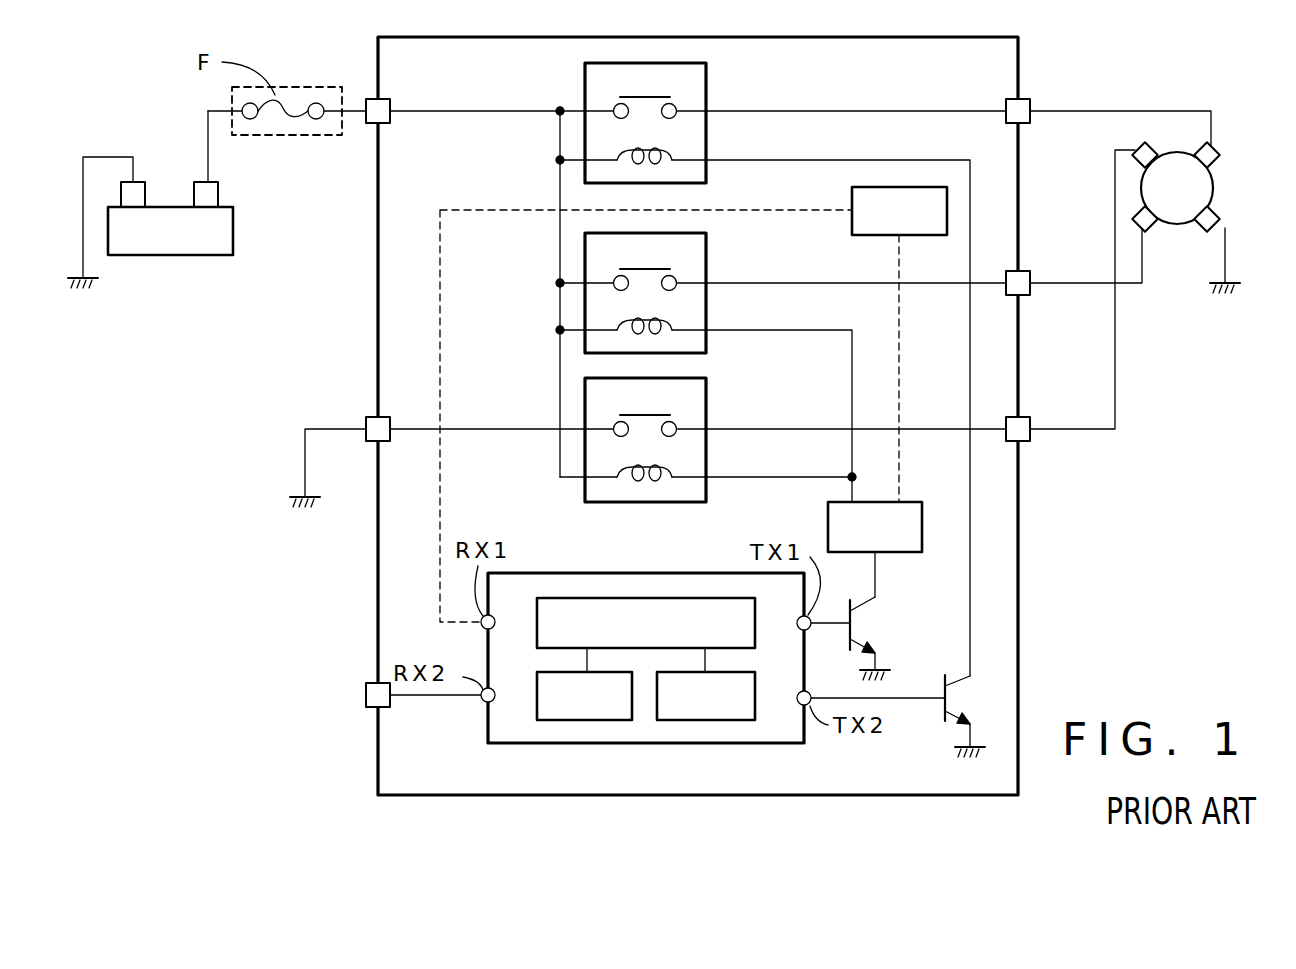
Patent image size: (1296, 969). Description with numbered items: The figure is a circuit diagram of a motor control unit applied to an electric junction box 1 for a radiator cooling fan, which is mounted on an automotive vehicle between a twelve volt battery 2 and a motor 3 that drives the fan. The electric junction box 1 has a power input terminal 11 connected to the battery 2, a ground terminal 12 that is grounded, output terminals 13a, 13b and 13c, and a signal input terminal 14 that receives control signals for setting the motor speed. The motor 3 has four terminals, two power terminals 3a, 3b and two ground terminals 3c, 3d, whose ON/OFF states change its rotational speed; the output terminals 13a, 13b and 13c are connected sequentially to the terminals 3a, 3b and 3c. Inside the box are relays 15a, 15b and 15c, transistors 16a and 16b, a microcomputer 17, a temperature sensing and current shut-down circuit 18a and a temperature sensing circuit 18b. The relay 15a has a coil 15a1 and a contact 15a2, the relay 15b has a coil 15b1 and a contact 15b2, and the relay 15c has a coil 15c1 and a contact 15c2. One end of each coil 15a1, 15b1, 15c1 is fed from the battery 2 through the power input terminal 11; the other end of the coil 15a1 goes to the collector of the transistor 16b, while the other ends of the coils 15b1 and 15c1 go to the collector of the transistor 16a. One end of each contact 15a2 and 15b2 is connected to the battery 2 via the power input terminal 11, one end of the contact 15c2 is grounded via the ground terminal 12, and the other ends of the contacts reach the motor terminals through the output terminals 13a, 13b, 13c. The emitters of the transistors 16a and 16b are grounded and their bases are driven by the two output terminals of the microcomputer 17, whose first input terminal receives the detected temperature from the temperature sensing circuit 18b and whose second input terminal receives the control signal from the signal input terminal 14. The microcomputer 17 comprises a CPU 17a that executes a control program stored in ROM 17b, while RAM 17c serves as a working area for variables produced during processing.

The electric junction box 1 is at (376, 260).
The battery 2 is at (172, 257).
The motor 3 is at (1215, 192).
The power terminal 3a is at (1214, 146).
The power terminal 3b is at (1158, 229).
The ground terminal 3c is at (1146, 143).
The ground terminal 3d is at (1222, 209).
The power input terminal 11 is at (372, 97).
The ground terminal 12 is at (374, 414).
The output terminal 13a is at (1032, 104).
The output terminal 13b is at (1032, 273).
The output terminal 13c is at (1031, 418).
The signal input terminal 14 is at (370, 708).
The relay 15a is at (708, 77).
The coil 15a1 is at (617, 156).
The contact 15a2 is at (625, 96).
The relay 15b is at (708, 248).
The coil 15b1 is at (617, 325).
The contact 15b2 is at (625, 268).
The relay 15c is at (708, 393).
The coil 15c1 is at (620, 470).
The contact 15c2 is at (628, 414).
The transistor 16a is at (866, 624).
The transistor 16b is at (942, 692).
The microcomputer 17 is at (532, 747).
The CPU 17a is at (590, 597).
The ROM 17b is at (548, 723).
The RAM 17c is at (672, 723).
The temperature sensing and current shut-down circuit 18a is at (826, 527).
The temperature sensing circuit 18b is at (851, 207).